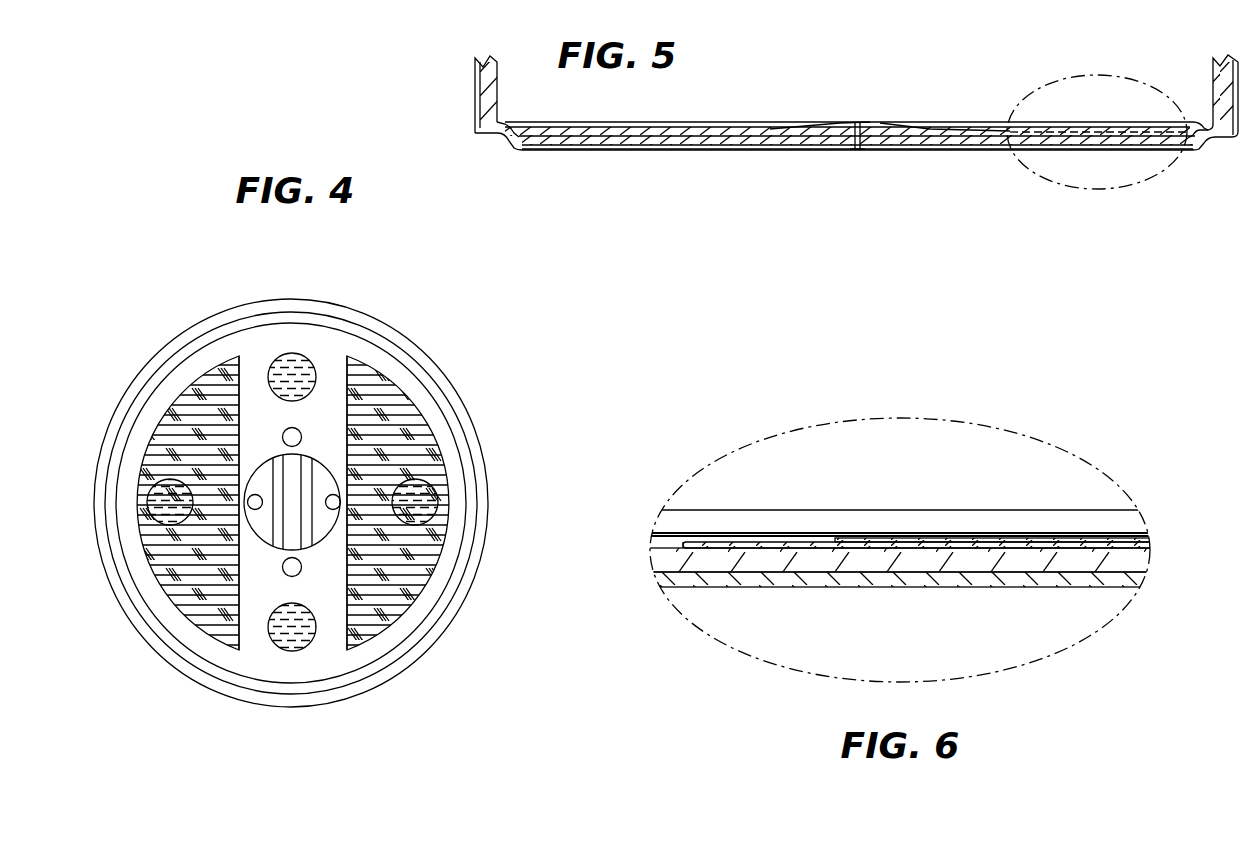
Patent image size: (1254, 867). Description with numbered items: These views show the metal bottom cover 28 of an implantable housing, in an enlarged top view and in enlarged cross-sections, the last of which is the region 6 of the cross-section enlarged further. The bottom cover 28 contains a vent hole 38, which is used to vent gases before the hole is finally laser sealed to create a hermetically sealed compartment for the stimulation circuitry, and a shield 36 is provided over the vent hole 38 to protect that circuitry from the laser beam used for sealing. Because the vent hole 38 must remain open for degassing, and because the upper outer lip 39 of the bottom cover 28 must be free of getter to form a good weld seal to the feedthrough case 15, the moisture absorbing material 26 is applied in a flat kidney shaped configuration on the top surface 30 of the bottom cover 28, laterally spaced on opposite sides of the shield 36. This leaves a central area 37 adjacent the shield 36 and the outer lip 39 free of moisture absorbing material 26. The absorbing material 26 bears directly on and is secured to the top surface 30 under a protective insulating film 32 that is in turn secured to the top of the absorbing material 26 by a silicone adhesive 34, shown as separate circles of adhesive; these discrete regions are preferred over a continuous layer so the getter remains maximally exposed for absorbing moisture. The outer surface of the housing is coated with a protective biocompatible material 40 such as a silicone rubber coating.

In FIG. 5, the region 6 is at (1110, 188).
In FIG. 5, the feedthrough case 15 is at (1213, 82).
In FIG. 4, the moisture absorbing material 26 is at (372, 610).
In FIG. 5, the moisture absorbing material 26 is at (1075, 130).
In FIG. 6, the moisture absorbing material 26 is at (845, 548).
In FIG. 4, the bottom cover 28 is at (438, 637).
In FIG. 5, the bottom cover 28 is at (1055, 150).
In FIG. 6, the bottom cover 28 is at (1130, 565).
In FIG. 6, the top surface 30 is at (673, 543).
In FIG. 4, the protective insulating film 32 is at (160, 397).
In FIG. 6, the protective insulating film 32 is at (1000, 535).
In FIG. 4, the silicone adhesive 34 is at (410, 485).
In FIG. 6, the silicone adhesive 34 is at (860, 538).
In FIG. 4, the shield 36 is at (288, 489).
In FIG. 5, the shield 36 is at (862, 122).
In FIG. 4, the central area 37 is at (257, 365).
In FIG. 5, the vent hole 38 is at (857, 150).
In FIG. 4, the outer lip 39 is at (458, 600).
In FIG. 6, the outer lip 39 is at (893, 510).
In FIG. 5, the protective biocompatible material 40 is at (638, 150).
In FIG. 6, the protective biocompatible material 40 is at (752, 587).